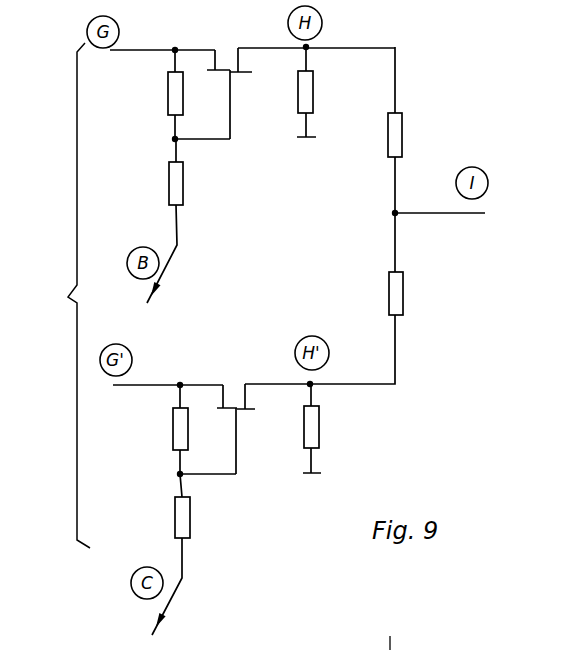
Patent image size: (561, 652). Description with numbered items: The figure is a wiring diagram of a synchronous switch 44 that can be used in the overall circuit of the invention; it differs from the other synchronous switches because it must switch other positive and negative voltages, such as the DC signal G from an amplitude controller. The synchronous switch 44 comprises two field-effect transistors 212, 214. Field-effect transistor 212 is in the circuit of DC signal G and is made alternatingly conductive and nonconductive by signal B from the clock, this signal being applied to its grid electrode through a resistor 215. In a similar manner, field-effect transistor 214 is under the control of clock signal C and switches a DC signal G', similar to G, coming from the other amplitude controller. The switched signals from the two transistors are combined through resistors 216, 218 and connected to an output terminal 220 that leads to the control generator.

The synchronous switch 44 is at (50, 295).
The field-effect transistor 212 is at (237, 77).
The field-effect transistor 214 is at (245, 413).
The resistor 215 is at (183, 183).
The resistor 216 is at (396, 145).
The resistor 218 is at (400, 303).
The output terminal 220 is at (440, 215).